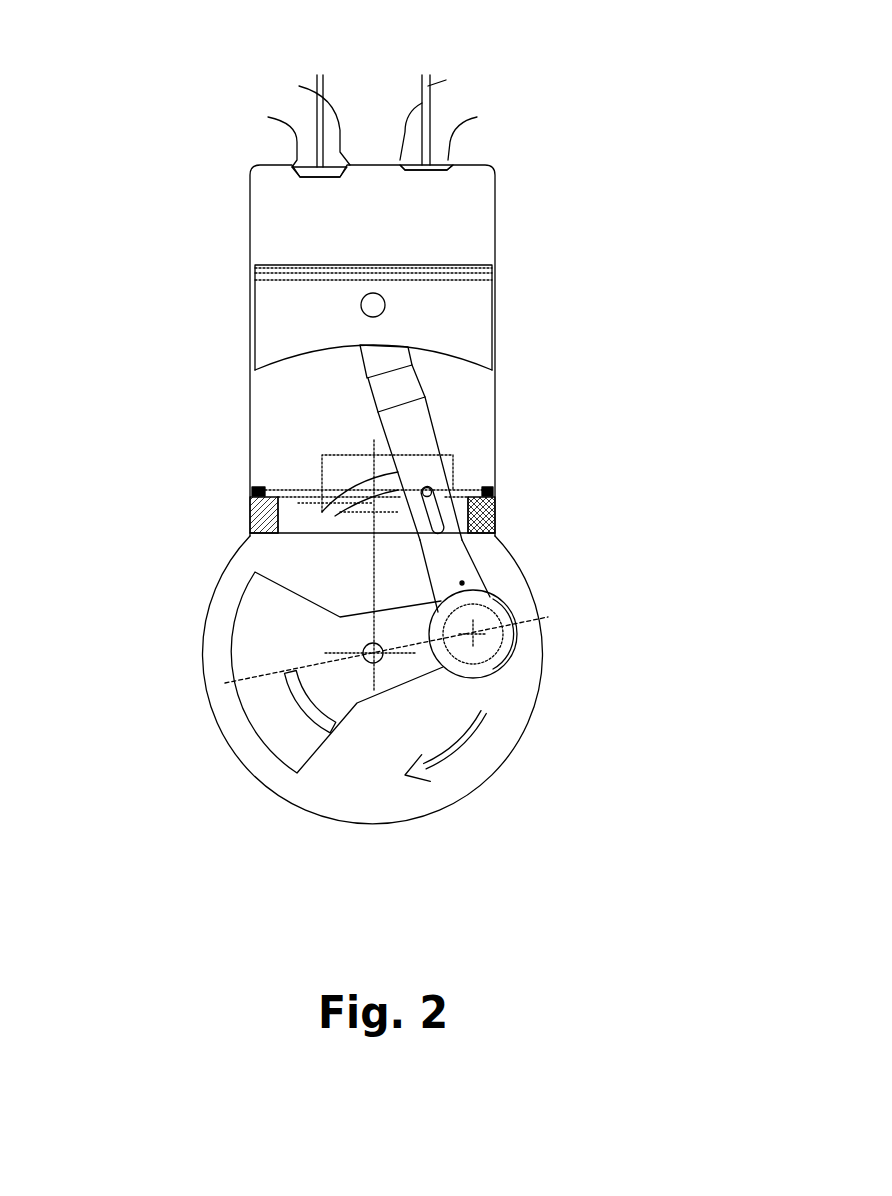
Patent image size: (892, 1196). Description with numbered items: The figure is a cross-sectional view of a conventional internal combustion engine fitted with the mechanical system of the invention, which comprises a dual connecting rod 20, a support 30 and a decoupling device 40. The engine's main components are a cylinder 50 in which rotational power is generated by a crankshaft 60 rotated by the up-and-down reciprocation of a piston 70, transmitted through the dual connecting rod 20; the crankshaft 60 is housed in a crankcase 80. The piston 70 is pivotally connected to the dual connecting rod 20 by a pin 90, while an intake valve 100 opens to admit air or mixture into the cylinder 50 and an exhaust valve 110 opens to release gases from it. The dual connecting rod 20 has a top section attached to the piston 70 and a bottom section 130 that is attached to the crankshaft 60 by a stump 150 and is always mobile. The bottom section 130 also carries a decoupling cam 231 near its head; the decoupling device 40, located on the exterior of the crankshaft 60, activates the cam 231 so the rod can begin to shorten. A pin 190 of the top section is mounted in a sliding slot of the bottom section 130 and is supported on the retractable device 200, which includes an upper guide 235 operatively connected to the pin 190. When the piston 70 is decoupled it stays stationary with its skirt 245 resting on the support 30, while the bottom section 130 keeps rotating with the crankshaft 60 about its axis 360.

The cylinder 50 is at (498, 235).
The piston 70 is at (455, 315).
The pin 90 is at (370, 302).
The intake valve 100 is at (307, 170).
The exhaust valve 110 is at (428, 160).
The dual connecting rod 20 is at (425, 448).
The bottom section 130 is at (455, 557).
The support 30 is at (493, 496).
The pin 190 is at (435, 483).
The decoupling cam 231 is at (462, 583).
The stump 150 is at (473, 633).
The crankcase 80 is at (372, 783).
The crankshaft 60 is at (283, 710).
The decoupling device 40 is at (310, 697).
The axis 360 is at (373, 653).
The skirt 245 is at (257, 370).
The upper guide 235 is at (332, 472).
The retractable device 200 is at (370, 505).